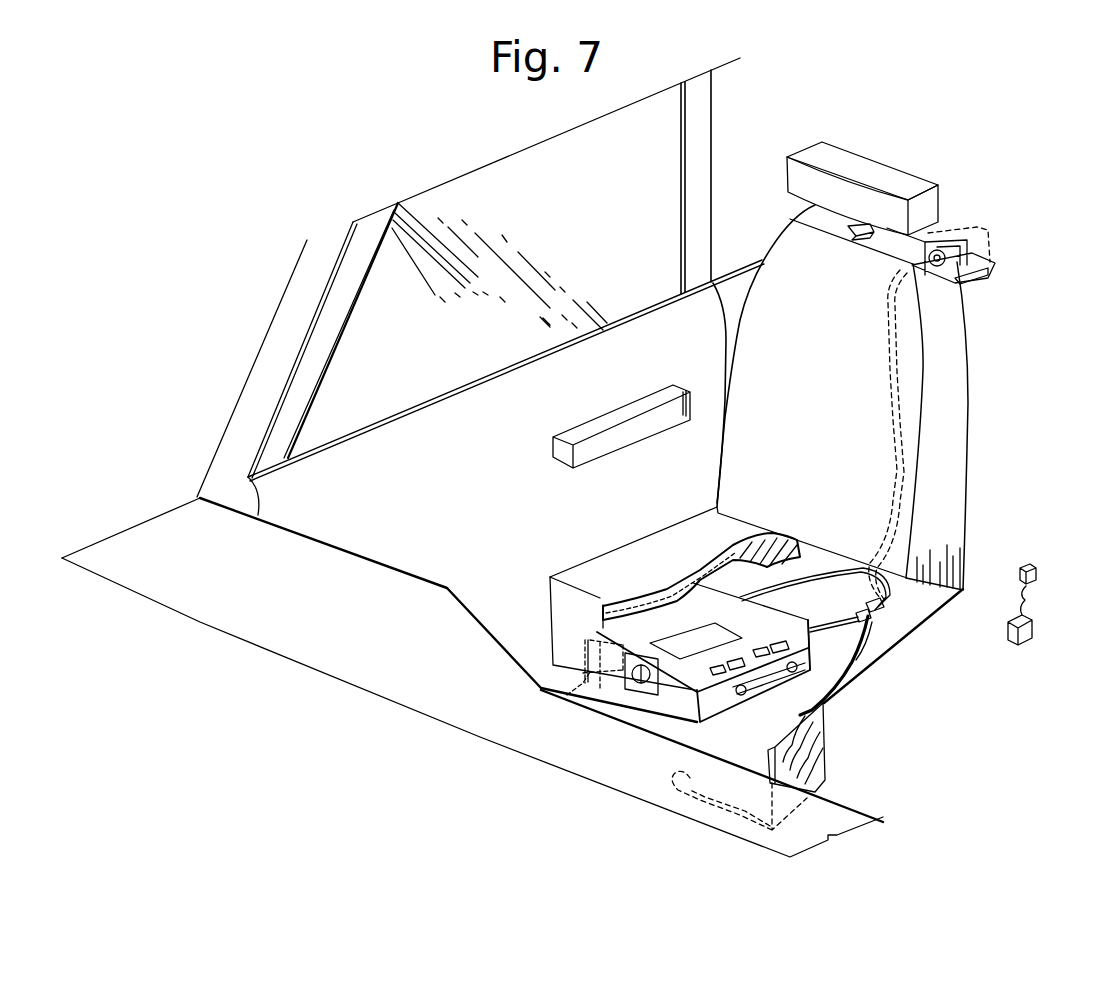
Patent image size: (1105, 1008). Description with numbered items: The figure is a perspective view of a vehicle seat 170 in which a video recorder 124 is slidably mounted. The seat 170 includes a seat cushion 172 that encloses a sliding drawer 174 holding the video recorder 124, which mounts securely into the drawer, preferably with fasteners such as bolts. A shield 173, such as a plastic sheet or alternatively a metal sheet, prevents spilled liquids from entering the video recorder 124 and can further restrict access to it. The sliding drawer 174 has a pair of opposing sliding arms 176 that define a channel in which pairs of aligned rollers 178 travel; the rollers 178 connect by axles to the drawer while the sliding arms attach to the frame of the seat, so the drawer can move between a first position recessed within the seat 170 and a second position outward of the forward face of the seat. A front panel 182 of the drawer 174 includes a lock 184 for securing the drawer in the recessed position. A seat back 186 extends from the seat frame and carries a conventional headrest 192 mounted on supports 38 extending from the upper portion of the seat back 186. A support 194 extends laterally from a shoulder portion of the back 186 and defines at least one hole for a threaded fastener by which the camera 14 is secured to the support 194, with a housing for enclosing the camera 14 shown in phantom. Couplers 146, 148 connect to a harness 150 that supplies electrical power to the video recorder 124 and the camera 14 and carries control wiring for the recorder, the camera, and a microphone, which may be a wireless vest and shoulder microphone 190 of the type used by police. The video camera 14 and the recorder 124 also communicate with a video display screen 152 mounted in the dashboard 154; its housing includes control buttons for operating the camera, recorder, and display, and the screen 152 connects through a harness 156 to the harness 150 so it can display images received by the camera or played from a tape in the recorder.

The camera 14 is at (958, 242).
The supports 38 is at (849, 229).
The video recorder 124 is at (703, 636).
The coupler 146 is at (882, 612).
The coupler 148 is at (855, 642).
The harness 150 is at (877, 613).
The video display screen 152 is at (817, 755).
The dashboard 154 is at (340, 593).
The harness 156 is at (737, 807).
The seat 170 is at (743, 517).
The seat cushion 172 is at (632, 580).
The shield 173 is at (652, 590).
The sliding drawer 174 is at (600, 637).
The sliding arms 176 is at (567, 695).
The rollers 178 is at (798, 672).
The front panel 182 is at (663, 675).
The lock 184 is at (640, 688).
The seat back 186 is at (940, 357).
The vest and shoulder microphone 190 is at (1005, 632).
The headrest 192 is at (862, 172).
The support 194 is at (990, 272).